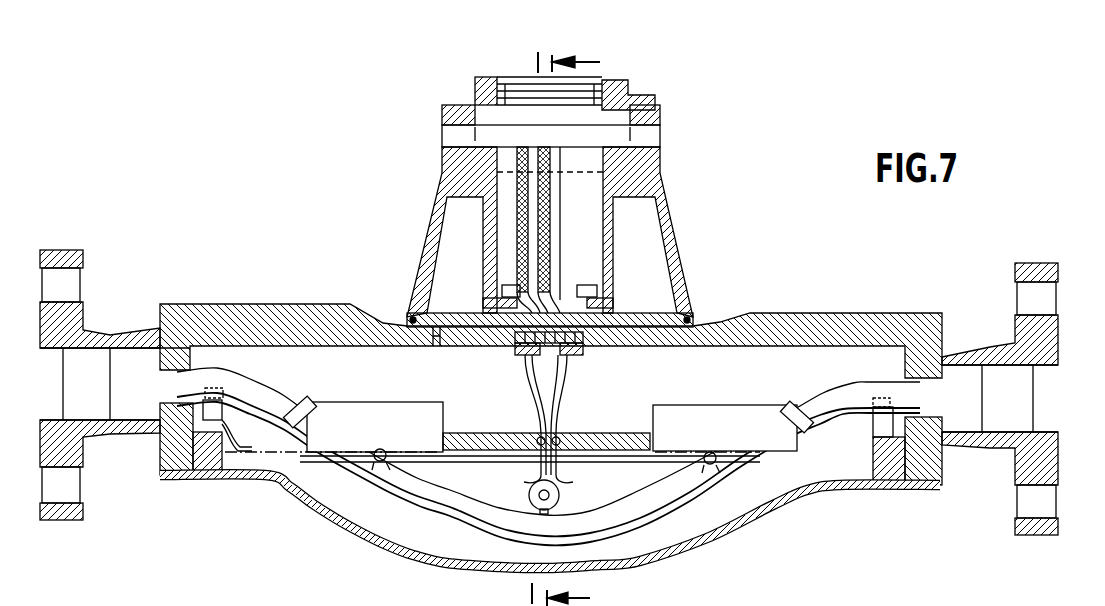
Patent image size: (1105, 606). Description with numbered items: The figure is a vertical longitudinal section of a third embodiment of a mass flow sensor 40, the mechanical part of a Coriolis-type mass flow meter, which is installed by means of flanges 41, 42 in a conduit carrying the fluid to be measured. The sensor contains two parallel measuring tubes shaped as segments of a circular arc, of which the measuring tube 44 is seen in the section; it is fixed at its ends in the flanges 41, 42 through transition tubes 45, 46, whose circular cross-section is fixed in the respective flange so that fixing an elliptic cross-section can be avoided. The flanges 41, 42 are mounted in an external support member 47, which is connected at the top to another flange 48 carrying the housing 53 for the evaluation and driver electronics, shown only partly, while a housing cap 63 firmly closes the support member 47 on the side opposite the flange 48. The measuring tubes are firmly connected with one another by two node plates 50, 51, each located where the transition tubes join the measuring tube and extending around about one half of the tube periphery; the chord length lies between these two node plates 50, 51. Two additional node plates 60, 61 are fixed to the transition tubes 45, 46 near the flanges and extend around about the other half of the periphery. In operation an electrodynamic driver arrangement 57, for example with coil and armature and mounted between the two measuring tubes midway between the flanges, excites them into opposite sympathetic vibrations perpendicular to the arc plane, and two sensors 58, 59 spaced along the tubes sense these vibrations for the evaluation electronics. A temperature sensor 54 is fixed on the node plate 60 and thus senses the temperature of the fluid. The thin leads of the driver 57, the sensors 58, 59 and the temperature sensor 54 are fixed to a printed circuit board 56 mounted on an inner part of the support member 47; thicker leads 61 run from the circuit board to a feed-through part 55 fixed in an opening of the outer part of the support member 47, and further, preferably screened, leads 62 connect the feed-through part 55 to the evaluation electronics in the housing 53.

The mass flow sensor 40 is at (318, 172).
The flange 41 is at (60, 250).
The flange 42 is at (1036, 263).
The measuring tube 44 is at (693, 500).
The transition tube 45 is at (254, 393).
The transition tube 46 is at (854, 397).
The support member 47 is at (763, 322).
The flange 48 is at (663, 214).
The node plate 50 is at (302, 396).
The node plate 51 is at (797, 403).
The housing 53 is at (660, 112).
The temperature sensor 54 is at (192, 472).
The feed-through part 55 is at (584, 357).
The printed circuit board 56 is at (393, 526).
The electrodynamic driver arrangement 57 is at (530, 503).
The sensor 58 is at (323, 502).
The sensor 59 is at (746, 496).
The node plate 60 is at (217, 387).
The leads 61 is at (527, 397).
The leads 62 is at (568, 243).
The housing cap 63 is at (582, 329).